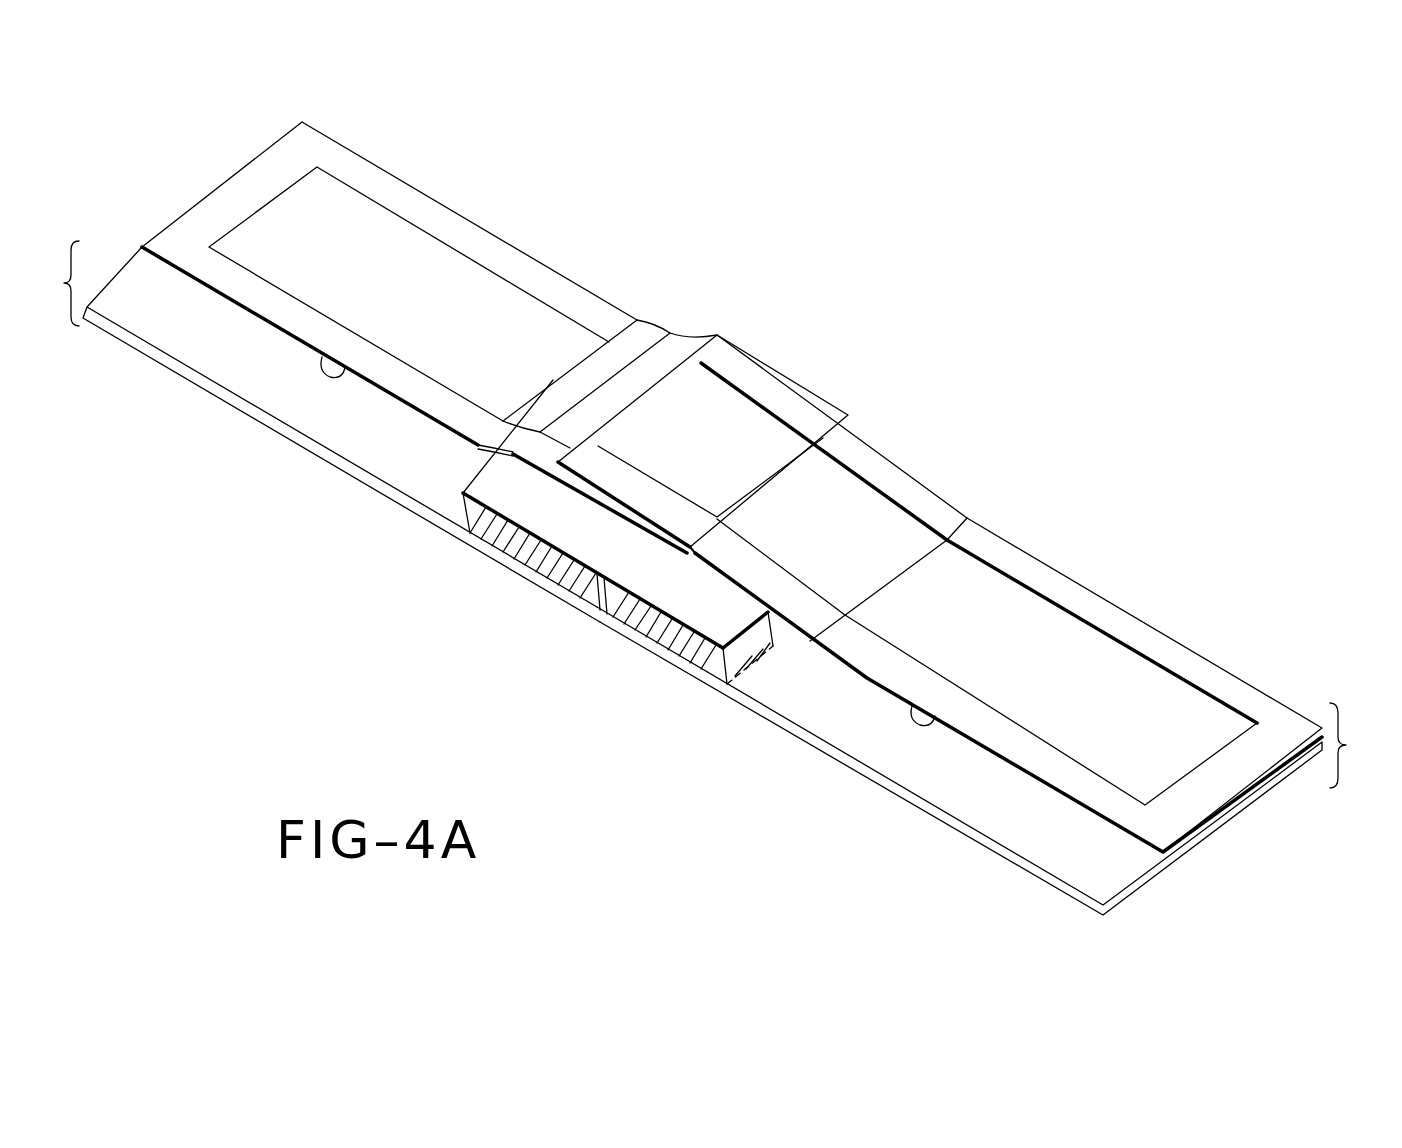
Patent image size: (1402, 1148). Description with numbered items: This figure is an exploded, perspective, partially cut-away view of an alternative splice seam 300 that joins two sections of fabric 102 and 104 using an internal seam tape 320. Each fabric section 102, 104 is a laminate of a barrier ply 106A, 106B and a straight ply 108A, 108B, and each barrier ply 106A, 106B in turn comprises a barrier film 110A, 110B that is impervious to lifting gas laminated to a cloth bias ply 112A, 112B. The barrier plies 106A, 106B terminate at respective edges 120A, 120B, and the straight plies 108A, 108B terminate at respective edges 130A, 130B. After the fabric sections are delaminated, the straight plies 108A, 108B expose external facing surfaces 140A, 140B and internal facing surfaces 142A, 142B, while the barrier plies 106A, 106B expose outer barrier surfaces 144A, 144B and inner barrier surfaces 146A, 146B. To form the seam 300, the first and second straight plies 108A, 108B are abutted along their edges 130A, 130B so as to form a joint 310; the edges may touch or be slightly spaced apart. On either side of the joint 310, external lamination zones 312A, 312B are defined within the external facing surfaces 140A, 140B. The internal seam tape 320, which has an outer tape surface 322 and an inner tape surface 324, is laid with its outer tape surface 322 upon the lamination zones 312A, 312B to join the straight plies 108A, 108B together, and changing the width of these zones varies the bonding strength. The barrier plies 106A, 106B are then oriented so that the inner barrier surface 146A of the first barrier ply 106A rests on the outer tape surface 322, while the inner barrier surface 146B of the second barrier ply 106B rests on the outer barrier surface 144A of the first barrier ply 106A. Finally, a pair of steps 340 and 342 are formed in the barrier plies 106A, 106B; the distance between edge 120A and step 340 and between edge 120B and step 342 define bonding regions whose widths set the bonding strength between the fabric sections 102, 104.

The splice seam 300 is at (1062, 298).
The fabric section 102 is at (44, 283).
The fabric section 104 is at (1365, 745).
The barrier ply 106A is at (222, 181).
The barrier ply 106B is at (1213, 658).
The straight ply 108A is at (152, 362).
The straight ply 108B is at (1040, 891).
The barrier film 110A is at (409, 307).
The barrier film 110B is at (979, 584).
The cloth bias ply 112A is at (385, 185).
The cloth bias ply 112B is at (1140, 620).
The edge 120A is at (717, 562).
The edge 120B is at (653, 380).
The edge 130A is at (588, 590).
The edge 130B is at (578, 596).
The external facing surface 140A is at (414, 400).
The external facing surface 140B is at (1008, 702).
The internal facing surface 142A is at (240, 415).
The internal facing surface 142B is at (880, 790).
The outer barrier surface 144A is at (460, 282).
The outer barrier surface 144B is at (1032, 612).
The inner barrier surface 146A is at (335, 372).
The inner barrier surface 146B is at (925, 720).
The joint 310 is at (599, 573).
The external lamination zone 312A is at (510, 548).
The external lamination zone 312B is at (660, 628).
The internal seam tape 320 is at (745, 662).
The outer tape surface 322 is at (615, 514).
The inner tape surface 324 is at (695, 672).
The step 340 is at (588, 367).
The step 342 is at (858, 497).